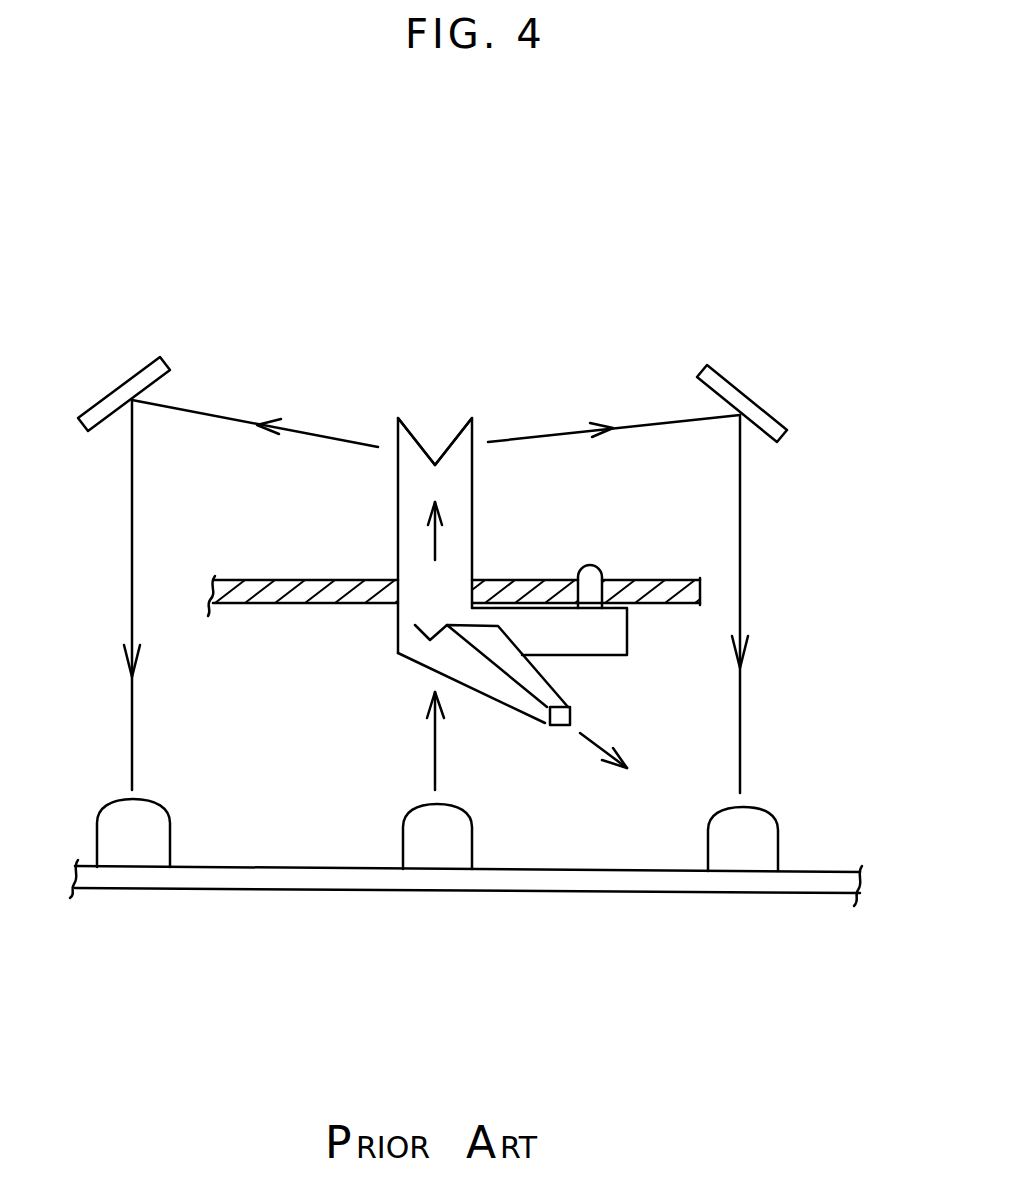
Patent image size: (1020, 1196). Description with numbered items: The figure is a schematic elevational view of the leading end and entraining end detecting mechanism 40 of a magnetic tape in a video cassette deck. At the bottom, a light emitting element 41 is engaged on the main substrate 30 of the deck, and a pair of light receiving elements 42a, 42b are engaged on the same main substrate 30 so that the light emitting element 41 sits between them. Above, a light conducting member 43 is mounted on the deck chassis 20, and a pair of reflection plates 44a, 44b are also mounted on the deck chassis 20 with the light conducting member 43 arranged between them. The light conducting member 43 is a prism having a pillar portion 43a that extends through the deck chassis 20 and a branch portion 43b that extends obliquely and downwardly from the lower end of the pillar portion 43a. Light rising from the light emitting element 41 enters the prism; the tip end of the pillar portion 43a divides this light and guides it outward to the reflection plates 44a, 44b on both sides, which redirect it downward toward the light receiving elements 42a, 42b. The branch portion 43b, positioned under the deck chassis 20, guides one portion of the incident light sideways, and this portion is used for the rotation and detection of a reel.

The leading end and entraining end detecting mechanism 40 is at (455, 372).
The reflection plate 44a is at (122, 373).
The reflection plate 44b is at (745, 385).
The light conducting member 43 is at (385, 518).
The pillar portion 43a is at (460, 482).
The branch portion 43b is at (510, 708).
The deck chassis 20 is at (670, 580).
The light receiving element 42a is at (130, 855).
The light emitting element 41 is at (440, 852).
The light receiving element 42b is at (745, 860).
The main substrate 30 is at (825, 895).